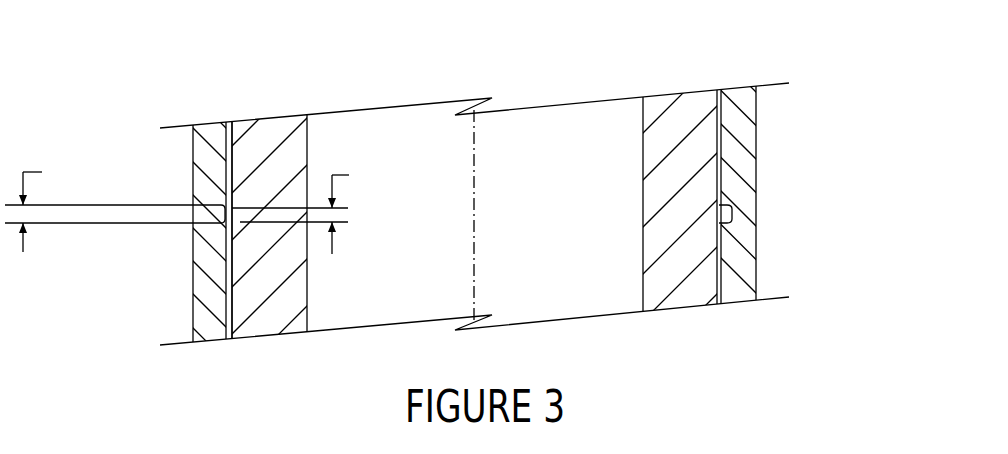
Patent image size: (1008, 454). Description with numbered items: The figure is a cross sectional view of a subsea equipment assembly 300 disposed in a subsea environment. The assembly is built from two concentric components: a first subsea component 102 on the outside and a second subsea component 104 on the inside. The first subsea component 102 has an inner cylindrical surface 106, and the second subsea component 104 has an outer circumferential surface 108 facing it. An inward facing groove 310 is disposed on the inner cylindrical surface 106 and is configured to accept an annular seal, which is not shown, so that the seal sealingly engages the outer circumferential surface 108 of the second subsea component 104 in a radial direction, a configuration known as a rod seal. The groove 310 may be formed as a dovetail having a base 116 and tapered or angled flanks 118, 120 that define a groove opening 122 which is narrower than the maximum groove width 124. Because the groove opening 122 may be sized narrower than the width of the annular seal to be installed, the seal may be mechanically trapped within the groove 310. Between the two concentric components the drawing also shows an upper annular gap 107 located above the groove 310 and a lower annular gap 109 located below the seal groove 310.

The subsea equipment assembly 300 is at (818, 66).
The first subsea component 102 is at (761, 233).
The second subsea component 104 is at (692, 259).
The inner cylindrical surface 106 is at (235, 270).
The upper annular gap 107 is at (241, 150).
The outer circumferential surface 108 is at (224, 302).
The lower annular gap 109 is at (236, 317).
The base 116 is at (210, 217).
The tapered flank 118 is at (218, 197).
The tapered flank 120 is at (222, 227).
The groove opening 122 is at (310, 210).
The maximum groove width 124 is at (49, 206).
The inward facing groove 310 is at (737, 205).